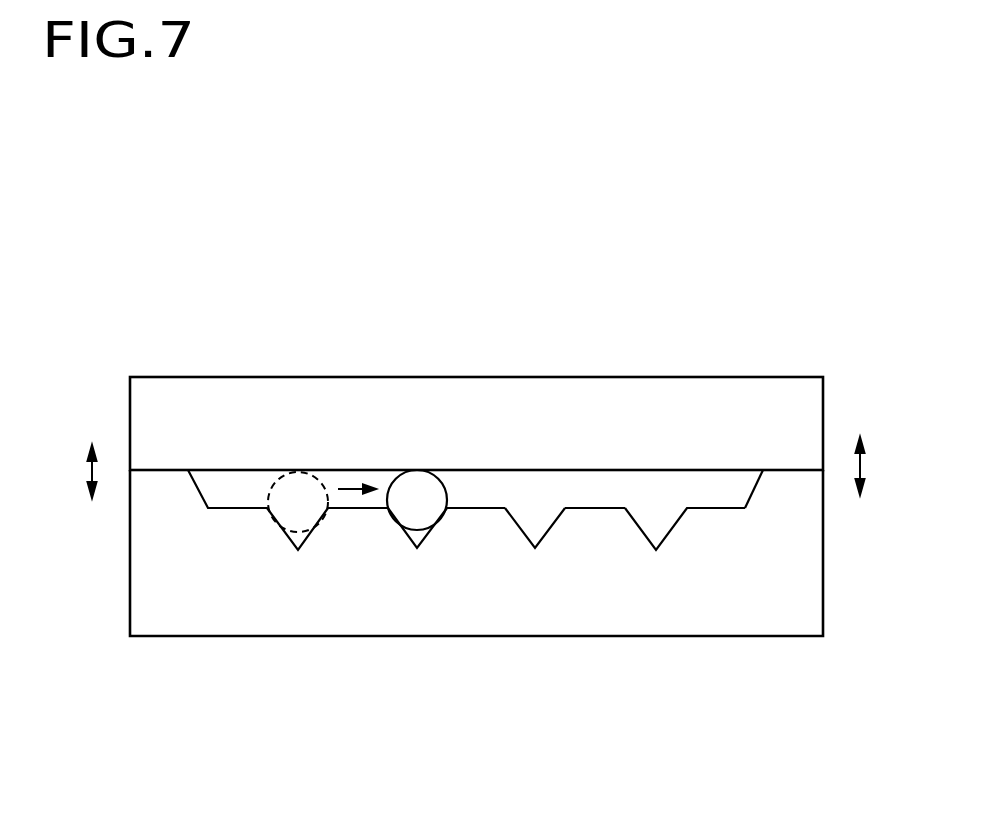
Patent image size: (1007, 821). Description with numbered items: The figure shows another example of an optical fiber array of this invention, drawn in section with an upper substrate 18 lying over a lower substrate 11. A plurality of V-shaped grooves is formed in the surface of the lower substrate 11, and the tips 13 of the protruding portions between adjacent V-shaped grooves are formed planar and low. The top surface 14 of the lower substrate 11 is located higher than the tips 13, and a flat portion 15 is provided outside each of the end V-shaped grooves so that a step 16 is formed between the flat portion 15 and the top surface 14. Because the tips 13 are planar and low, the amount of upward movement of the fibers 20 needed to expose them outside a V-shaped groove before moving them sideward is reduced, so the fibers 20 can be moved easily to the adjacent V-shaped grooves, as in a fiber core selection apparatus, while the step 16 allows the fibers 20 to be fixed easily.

The lower substrate 11 is at (802, 557).
The tips of the protruding portions 13 is at (602, 508).
The top surface 14 is at (790, 470).
The flat portion 15 is at (722, 508).
The step 16 is at (752, 502).
The upper substrate 18 is at (788, 410).
The fibers 20 is at (293, 485).